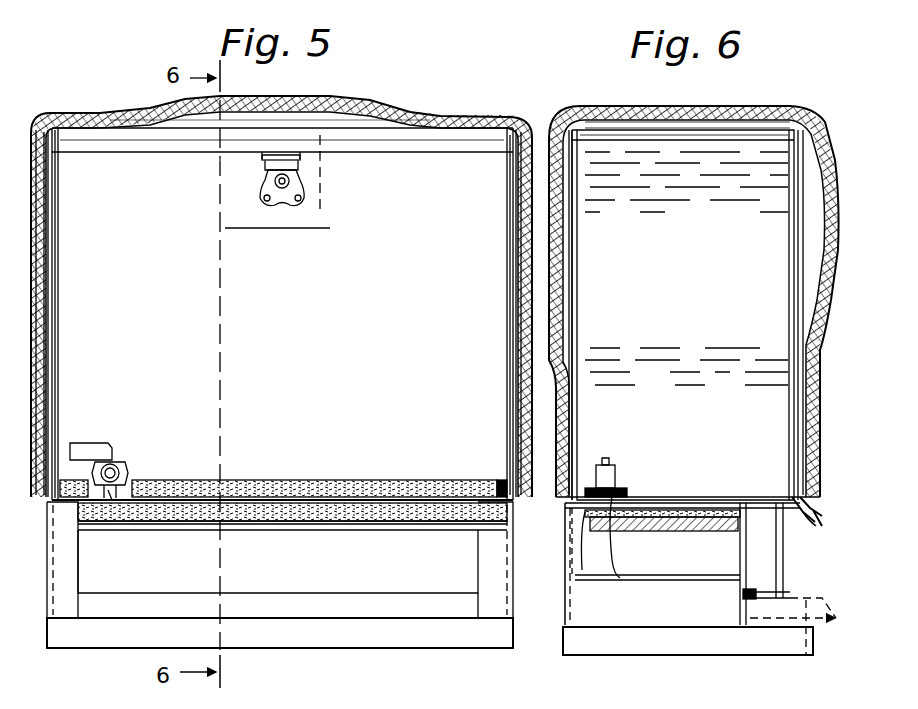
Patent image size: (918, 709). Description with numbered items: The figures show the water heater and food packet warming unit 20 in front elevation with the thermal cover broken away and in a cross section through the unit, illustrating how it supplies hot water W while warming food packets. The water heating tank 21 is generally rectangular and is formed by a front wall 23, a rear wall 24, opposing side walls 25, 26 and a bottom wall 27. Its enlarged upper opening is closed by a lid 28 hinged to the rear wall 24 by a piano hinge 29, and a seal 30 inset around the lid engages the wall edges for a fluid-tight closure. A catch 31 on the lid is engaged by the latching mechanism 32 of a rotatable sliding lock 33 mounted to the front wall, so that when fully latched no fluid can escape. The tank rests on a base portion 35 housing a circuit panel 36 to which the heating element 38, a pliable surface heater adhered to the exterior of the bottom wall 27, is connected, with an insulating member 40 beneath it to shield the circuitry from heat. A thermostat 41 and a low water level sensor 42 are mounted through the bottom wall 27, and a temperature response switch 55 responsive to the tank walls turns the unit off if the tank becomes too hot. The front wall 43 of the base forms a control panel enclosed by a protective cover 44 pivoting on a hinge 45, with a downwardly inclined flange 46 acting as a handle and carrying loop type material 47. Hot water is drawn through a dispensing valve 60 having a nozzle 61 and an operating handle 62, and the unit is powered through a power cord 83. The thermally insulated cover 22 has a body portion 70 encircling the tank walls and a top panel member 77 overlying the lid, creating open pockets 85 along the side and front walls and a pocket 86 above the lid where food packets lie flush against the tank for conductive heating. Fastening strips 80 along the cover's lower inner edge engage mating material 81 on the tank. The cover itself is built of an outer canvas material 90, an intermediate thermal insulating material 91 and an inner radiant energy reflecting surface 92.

In FIG. 5, the water heater and food packet warming unit 20 is at (358, 652).
In FIG. 5, the water heating tank 21 is at (298, 522).
In FIG. 5, the thermally insulated cover 22 is at (58, 410).
In FIG. 5, the front wall 23 is at (266, 336).
In FIG. 6, the rear wall 24 is at (580, 219).
In FIG. 5, the side wall 25 is at (507, 425).
In FIG. 5, the side wall 26 is at (58, 240).
In FIG. 6, the bottom wall 27 is at (672, 506).
In FIG. 5, the lid 28 is at (383, 143).
In FIG. 6, the lid 28 is at (624, 142).
In FIG. 6, the piano hinge 29 is at (548, 125).
In FIG. 6, the seal 30 is at (768, 142).
In FIG. 5, the catch 31 is at (260, 165).
In FIG. 5, the latching mechanism 32 is at (278, 155).
In FIG. 5, the rotatable sliding lock 33 is at (262, 202).
In FIG. 5, the base portion 35 is at (45, 590).
In FIG. 6, the base portion 35 is at (596, 640).
In FIG. 6, the circuit panel 36 is at (607, 578).
In FIG. 6, the heating element 38 is at (664, 530).
In FIG. 6, the insulating member 40 is at (726, 508).
In FIG. 6, the thermostat 41 is at (600, 458).
In FIG. 6, the low water level sensor 42 is at (610, 535).
In FIG. 6, the front wall of the base 43 is at (744, 552).
In FIG. 5, the protective cover 44 is at (347, 588).
In FIG. 6, the protective cover 44 is at (786, 580).
In FIG. 6, the hinge 45 is at (742, 596).
In FIG. 5, the flange 46 is at (184, 527).
In FIG. 6, the flange 46 is at (822, 515).
In FIG. 5, the loop type material 47 is at (388, 512).
In FIG. 6, the loop type material 47 is at (800, 532).
In FIG. 5, the temperature response switch 55 is at (500, 478).
In FIG. 5, the dispensing valve 60 is at (130, 467).
In FIG. 5, the nozzle 61 is at (112, 502).
In FIG. 5, the operating handle 62 is at (94, 442).
In FIG. 5, the body portion 70 is at (50, 320).
In FIG. 5, the top panel member 77 is at (272, 108).
In FIG. 6, the top panel member 77 is at (672, 102).
In FIG. 6, the hook and loop fastening material strips 80 is at (672, 519).
In FIG. 5, the mating hook and loop fabric material 81 is at (252, 486).
In FIG. 6, the mating hook and loop fabric material 81 is at (792, 500).
In FIG. 6, the power cord 83 is at (565, 588).
In FIG. 5, the open pockets 85 is at (58, 205).
In FIG. 6, the open pockets 85 is at (578, 300).
In FIG. 5, the pocket 86 is at (205, 130).
In FIG. 6, the pocket 86 is at (676, 142).
In FIG. 5, the outer canvas material 90 is at (100, 120).
In FIG. 6, the outer canvas material 90 is at (806, 500).
In FIG. 5, the intermediate thermal insulating material 91 is at (66, 118).
In FIG. 5, the inner radiant energy reflecting surface 92 is at (78, 130).
In FIG. 6, the inner radiant energy reflecting surface 92 is at (828, 98).
In FIG. 6, the hot water W is at (694, 233).